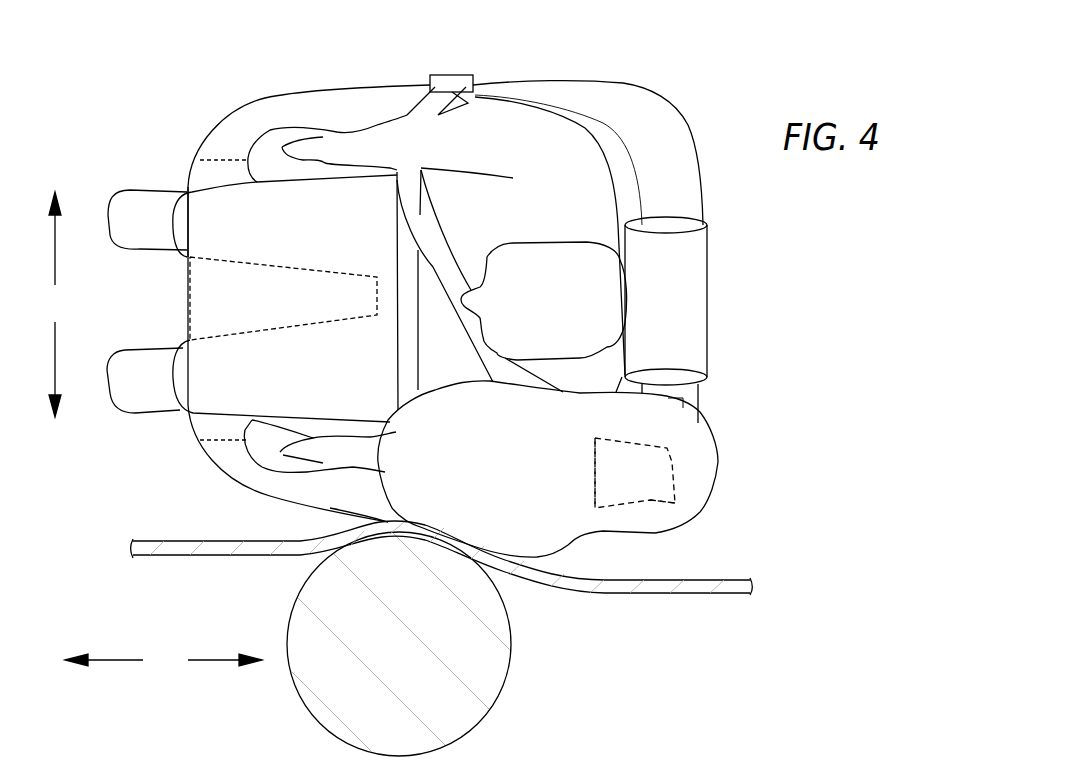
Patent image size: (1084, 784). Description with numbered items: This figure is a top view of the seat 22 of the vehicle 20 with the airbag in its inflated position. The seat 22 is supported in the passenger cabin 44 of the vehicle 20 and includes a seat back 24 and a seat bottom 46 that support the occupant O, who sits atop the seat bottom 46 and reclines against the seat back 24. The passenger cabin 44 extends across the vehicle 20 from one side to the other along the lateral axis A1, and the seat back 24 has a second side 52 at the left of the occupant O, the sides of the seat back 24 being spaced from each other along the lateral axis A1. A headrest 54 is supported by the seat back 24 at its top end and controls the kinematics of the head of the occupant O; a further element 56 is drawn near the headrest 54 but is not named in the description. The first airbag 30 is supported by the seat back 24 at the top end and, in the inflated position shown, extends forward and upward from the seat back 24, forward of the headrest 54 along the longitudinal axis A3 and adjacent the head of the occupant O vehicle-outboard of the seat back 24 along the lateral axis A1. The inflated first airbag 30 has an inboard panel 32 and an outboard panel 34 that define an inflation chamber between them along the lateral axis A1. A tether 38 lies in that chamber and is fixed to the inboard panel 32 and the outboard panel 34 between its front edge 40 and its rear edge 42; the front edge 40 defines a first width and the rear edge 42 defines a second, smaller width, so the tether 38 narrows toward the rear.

The vehicle 20 is at (671, 593).
The seat 22 is at (457, 58).
The seat back 24 is at (617, 107).
The first airbag 30 is at (380, 490).
The inboard panel 32 is at (593, 393).
The outboard panel 34 is at (567, 543).
The tether 38 is at (650, 500).
The front edge 40 is at (593, 467).
The rear edge 42 is at (677, 468).
The passenger cabin 44 is at (156, 459).
The seat bottom 46 is at (297, 97).
The second side 52 is at (545, 80).
The headrest 54 is at (685, 262).
The bracket 56 is at (702, 401).
The occupant O is at (387, 140).
The lateral axis A1 is at (57, 304).
The longitudinal axis A3 is at (163, 661).